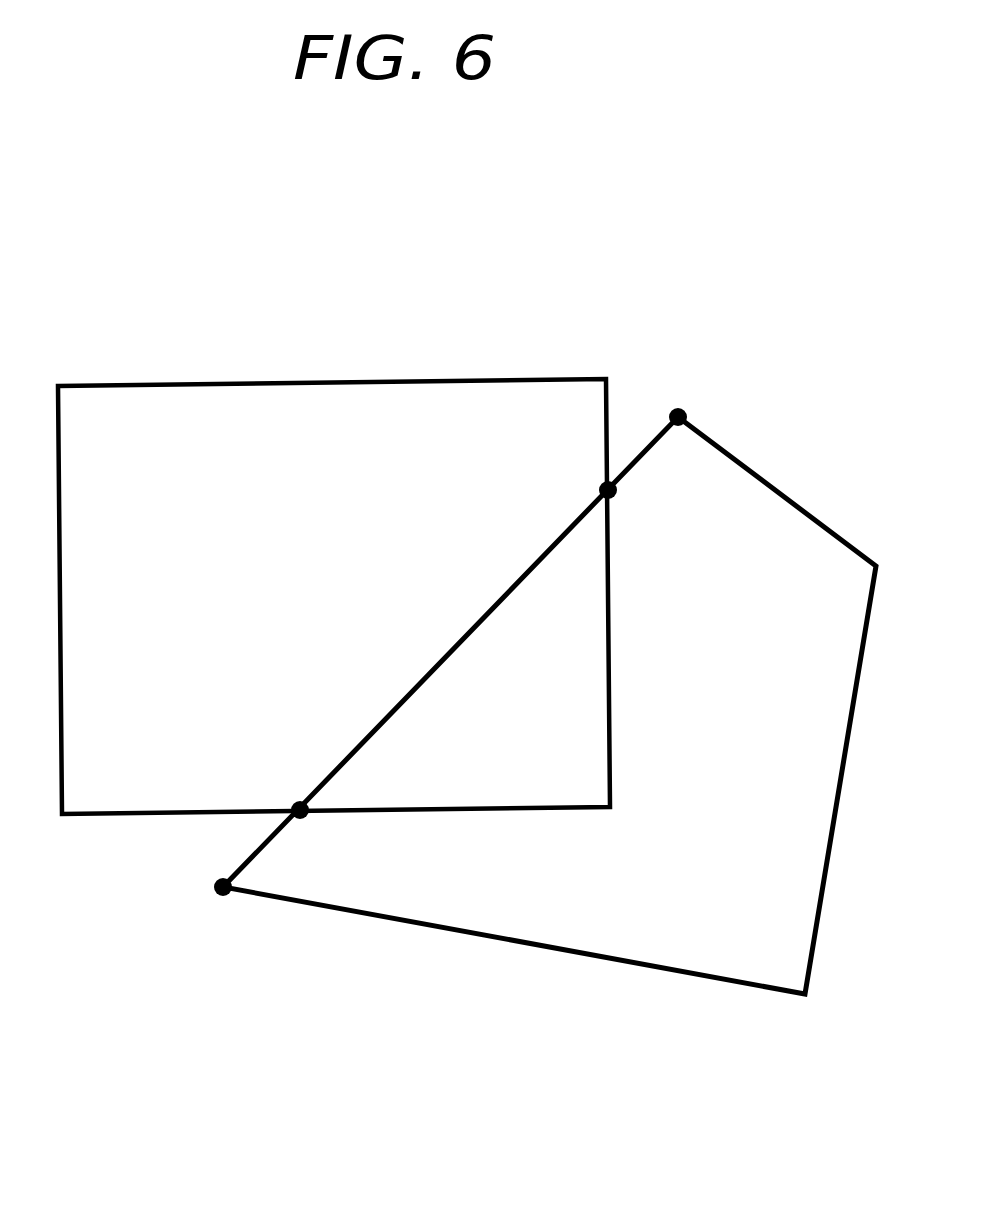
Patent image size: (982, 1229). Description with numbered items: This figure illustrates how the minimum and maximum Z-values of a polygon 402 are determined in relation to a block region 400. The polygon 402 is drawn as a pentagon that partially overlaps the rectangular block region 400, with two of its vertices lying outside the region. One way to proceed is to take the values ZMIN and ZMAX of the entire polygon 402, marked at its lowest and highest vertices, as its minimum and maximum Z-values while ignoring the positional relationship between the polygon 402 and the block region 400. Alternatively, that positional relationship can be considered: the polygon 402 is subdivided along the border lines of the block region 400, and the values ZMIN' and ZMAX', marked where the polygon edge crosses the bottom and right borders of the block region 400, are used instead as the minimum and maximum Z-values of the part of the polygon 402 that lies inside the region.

The block region 400 is at (182, 368).
The polygon 402 is at (795, 500).
The maximum Z-value ZMAX is at (685, 375).
The maximum Z-value of the subdivided polygon part ZMAX' is at (493, 487).
The minimum Z-value ZMIN is at (204, 951).
The minimum Z-value of the subdivided polygon part ZMIN' is at (222, 773).